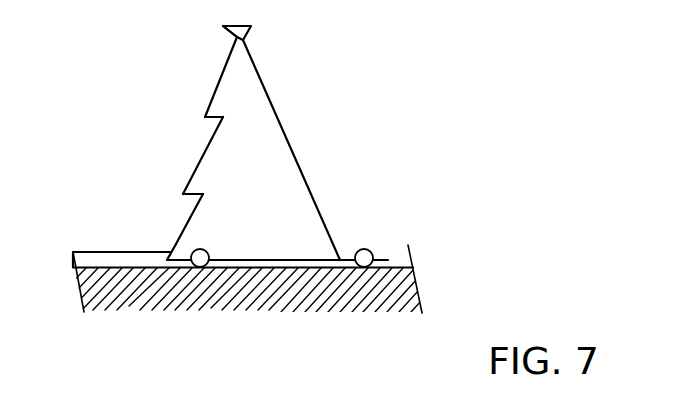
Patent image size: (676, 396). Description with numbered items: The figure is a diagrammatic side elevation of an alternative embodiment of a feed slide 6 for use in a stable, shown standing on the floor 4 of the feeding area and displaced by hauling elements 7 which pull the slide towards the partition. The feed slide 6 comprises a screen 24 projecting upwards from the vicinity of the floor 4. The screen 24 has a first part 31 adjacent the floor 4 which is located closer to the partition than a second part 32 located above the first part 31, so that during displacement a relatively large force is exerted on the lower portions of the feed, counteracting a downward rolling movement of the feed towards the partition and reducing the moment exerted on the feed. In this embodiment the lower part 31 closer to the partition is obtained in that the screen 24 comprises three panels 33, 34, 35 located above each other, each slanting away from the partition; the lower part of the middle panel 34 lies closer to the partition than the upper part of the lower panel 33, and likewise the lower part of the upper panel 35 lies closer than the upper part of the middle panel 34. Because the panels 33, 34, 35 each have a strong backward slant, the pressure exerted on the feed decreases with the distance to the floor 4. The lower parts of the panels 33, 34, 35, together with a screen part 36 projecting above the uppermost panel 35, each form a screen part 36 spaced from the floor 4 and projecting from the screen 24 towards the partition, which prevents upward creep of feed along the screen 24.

The floor 4 is at (150, 272).
The feed slide 6 is at (217, 146).
The hauling elements 7 is at (121, 304).
The screen 24 is at (243, 40).
The first part 31 is at (171, 247).
The second part 32 is at (194, 205).
The lower panel 33 is at (185, 227).
The middle panel 34 is at (195, 163).
The upper panel 35 is at (221, 83).
The screen part 36 is at (232, 33).